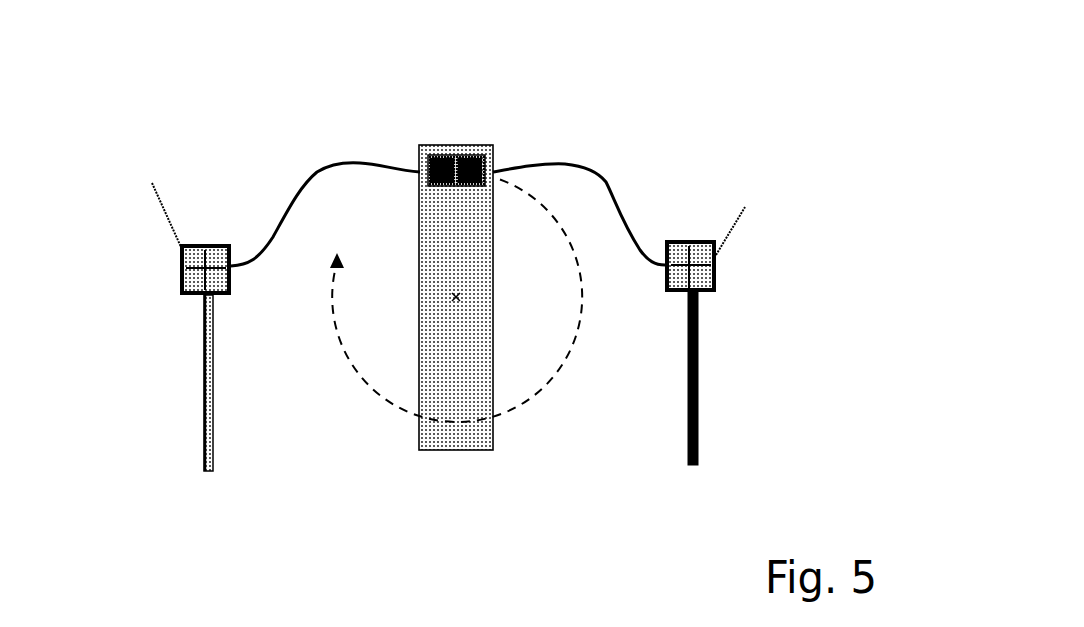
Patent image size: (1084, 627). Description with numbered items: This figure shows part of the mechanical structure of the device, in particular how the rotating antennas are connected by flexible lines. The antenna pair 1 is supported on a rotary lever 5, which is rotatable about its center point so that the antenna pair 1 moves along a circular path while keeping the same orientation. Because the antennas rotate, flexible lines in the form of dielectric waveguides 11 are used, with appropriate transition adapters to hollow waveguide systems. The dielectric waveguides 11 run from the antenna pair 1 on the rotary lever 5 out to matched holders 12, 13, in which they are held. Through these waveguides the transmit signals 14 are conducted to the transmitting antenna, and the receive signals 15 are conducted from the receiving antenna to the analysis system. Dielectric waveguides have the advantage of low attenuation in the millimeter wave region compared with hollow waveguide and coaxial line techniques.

The antenna pair 1 is at (452, 158).
The rotary lever 5 is at (443, 357).
The dielectric waveguides 11 is at (313, 172).
The holder 12 is at (203, 361).
The holder 13 is at (698, 353).
The transmit signals 14 is at (748, 234).
The receive signals 15 is at (178, 205).